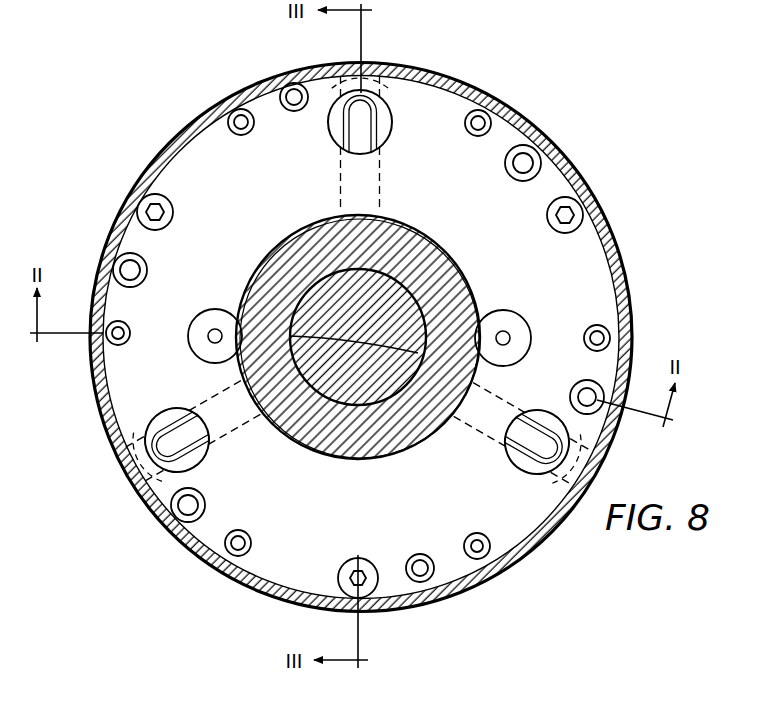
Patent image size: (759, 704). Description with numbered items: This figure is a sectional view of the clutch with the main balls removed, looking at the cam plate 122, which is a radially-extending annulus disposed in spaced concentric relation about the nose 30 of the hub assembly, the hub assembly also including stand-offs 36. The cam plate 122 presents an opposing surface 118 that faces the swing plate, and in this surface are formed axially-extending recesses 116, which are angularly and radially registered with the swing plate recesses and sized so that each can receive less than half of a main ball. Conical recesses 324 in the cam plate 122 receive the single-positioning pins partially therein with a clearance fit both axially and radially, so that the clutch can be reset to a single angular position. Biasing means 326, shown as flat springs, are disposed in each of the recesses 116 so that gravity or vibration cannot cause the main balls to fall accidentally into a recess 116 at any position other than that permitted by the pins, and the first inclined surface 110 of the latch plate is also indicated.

The nose 30 is at (452, 297).
The stand-offs 36 is at (383, 394).
The first inclined surface 110 is at (382, 97).
The axially-extending recess 116 is at (538, 471).
The opposing surface 118 is at (443, 122).
The cam plate 122 is at (518, 203).
The conical recess 324 is at (196, 346).
The biasing means 326 is at (162, 428).